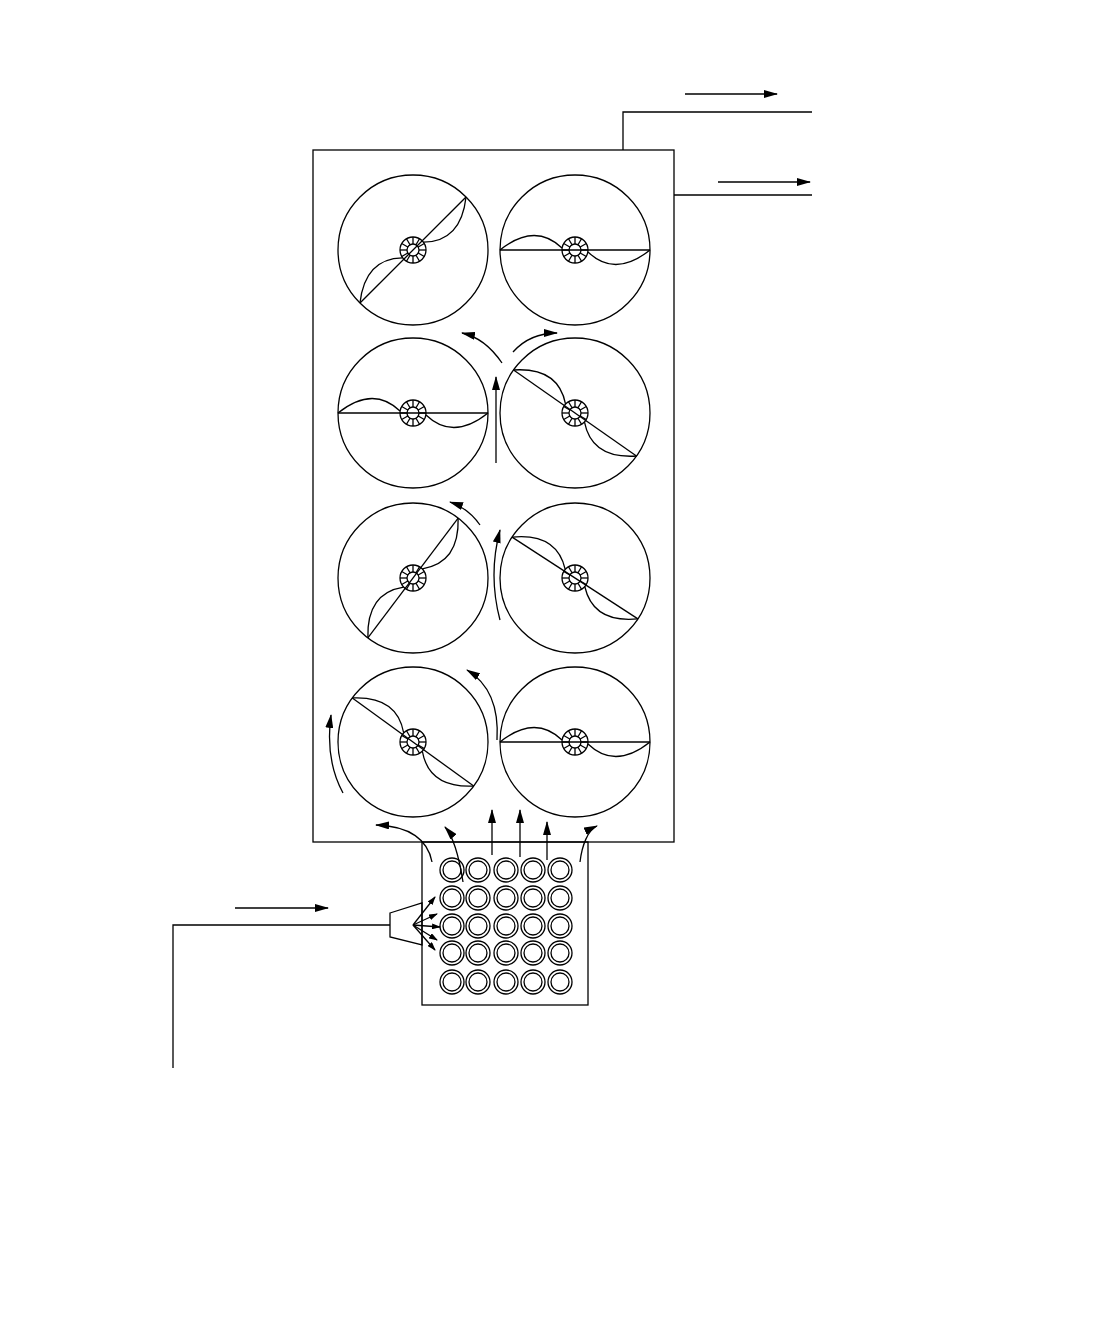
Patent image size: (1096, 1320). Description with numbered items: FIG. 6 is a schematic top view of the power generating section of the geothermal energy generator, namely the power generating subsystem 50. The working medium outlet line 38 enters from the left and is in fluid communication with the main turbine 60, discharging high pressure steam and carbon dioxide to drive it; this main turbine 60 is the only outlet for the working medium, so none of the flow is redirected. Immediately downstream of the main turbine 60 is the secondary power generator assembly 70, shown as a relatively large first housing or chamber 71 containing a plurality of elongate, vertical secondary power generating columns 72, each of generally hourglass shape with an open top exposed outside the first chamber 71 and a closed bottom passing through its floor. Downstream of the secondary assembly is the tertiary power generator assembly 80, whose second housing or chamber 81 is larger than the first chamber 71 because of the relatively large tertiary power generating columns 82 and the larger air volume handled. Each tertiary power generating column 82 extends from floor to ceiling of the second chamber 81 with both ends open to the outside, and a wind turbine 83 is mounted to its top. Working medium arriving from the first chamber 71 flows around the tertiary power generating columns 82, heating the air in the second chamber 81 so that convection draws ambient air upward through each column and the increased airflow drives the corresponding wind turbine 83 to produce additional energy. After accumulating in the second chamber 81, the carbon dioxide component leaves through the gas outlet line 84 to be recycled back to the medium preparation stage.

The working medium outlet line 38 is at (173, 1000).
The power generating subsystem 50 is at (168, 630).
The main turbine 60 is at (400, 937).
The secondary power generator assembly 70 is at (618, 946).
The first housing or chamber 71 is at (588, 883).
The secondary power generating columns 72 is at (540, 994).
The tertiary power generator assembly 80 is at (742, 563).
The second housing or chamber 81 is at (674, 485).
The tertiary power generating columns 82 is at (498, 496).
The wind turbine 83 is at (360, 402).
The gas outlet line 84 is at (653, 112).